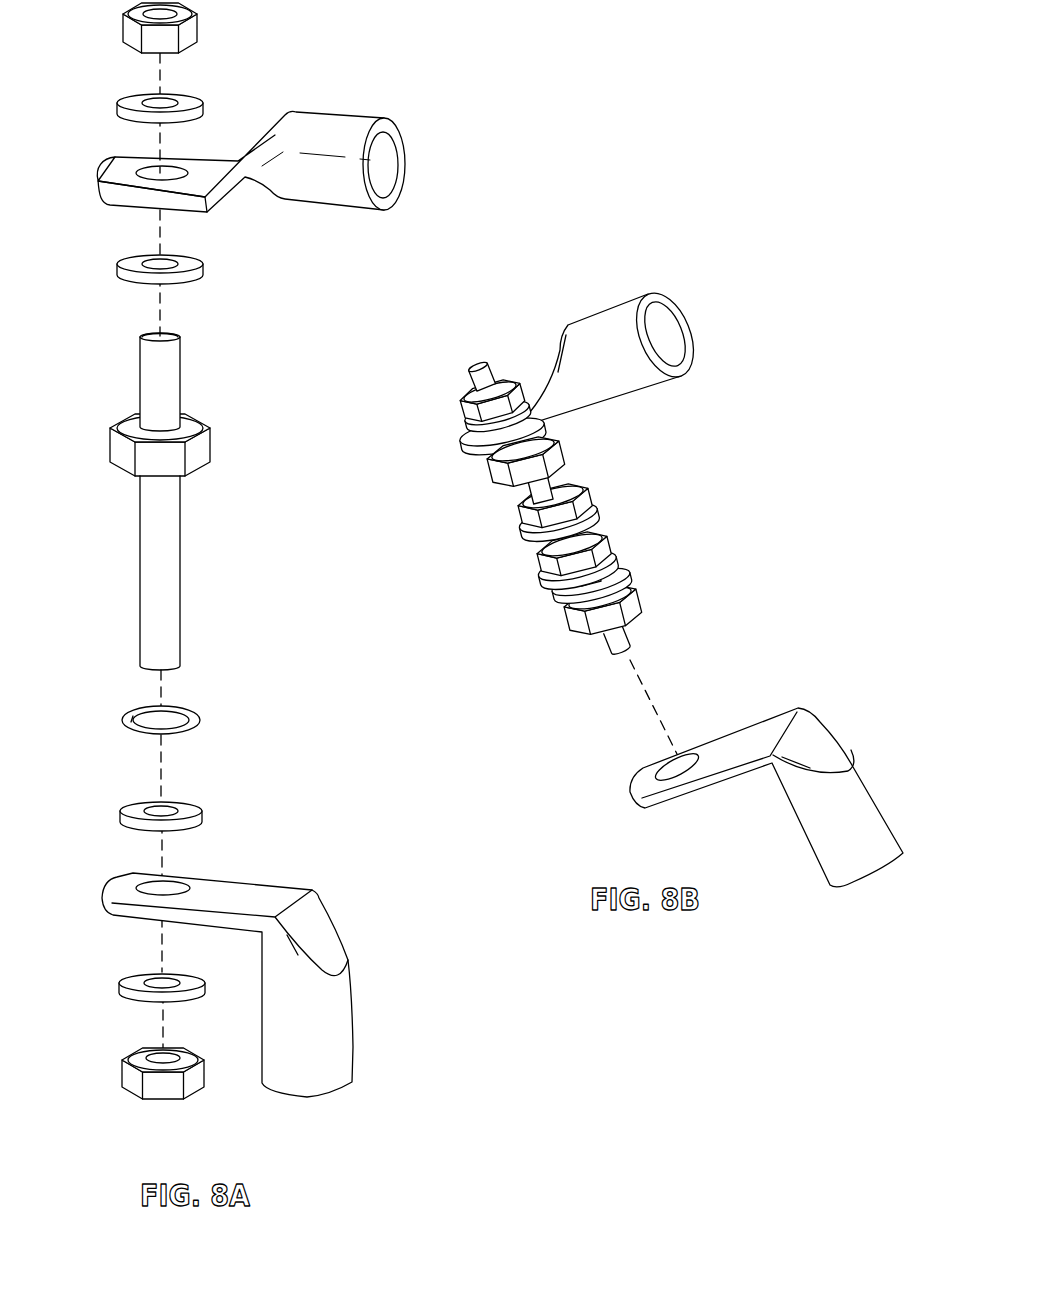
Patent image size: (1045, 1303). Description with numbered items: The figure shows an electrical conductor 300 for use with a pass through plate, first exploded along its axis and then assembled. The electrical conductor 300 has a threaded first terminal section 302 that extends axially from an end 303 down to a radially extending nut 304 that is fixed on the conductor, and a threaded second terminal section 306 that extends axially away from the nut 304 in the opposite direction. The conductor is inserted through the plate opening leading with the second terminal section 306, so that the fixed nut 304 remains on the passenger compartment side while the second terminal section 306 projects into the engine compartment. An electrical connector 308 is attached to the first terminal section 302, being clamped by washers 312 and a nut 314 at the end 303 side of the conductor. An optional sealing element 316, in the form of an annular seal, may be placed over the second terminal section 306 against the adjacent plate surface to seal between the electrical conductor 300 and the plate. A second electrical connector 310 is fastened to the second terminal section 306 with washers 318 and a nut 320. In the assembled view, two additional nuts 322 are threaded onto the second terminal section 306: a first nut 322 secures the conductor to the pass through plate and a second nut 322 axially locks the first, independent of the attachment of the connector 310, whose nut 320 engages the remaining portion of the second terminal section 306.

In FIG. 8A, the electrical conductor 300 is at (182, 563).
In FIG. 8B, the electrical conductor 300 is at (533, 491).
In FIG. 8A, the first terminal section 302 is at (176, 373).
In FIG. 8B, the first terminal section 302 is at (470, 392).
In FIG. 8A, the end 303 is at (155, 333).
In FIG. 8B, the end 303 is at (476, 360).
In FIG. 8A, the nut 304 is at (198, 422).
In FIG. 8B, the nut 304 is at (558, 446).
In FIG. 8A, the second terminal section 306 is at (176, 652).
In FIG. 8B, the second terminal section 306 is at (627, 637).
In FIG. 8A, the electrical connector 308 is at (337, 124).
In FIG. 8B, the electrical connector 308 is at (580, 327).
In FIG. 8A, the electrical connector 310 is at (343, 1003).
In FIG. 8B, the electrical connector 310 is at (860, 797).
In FIG. 8A, the washers 312 is at (203, 109).
In FIG. 8B, the washers 312 is at (468, 430).
In FIG. 8A, the nut 314 is at (191, 31).
In FIG. 8A, the sealing element 316 is at (192, 726).
In FIG. 8A, the washers 318 is at (202, 817).
In FIG. 8B, the washers 318 is at (555, 585).
In FIG. 8A, the nut 320 is at (130, 1078).
In FIG. 8B, the nut 320 is at (636, 598).
In FIG. 8B, the nuts 322 is at (583, 500).